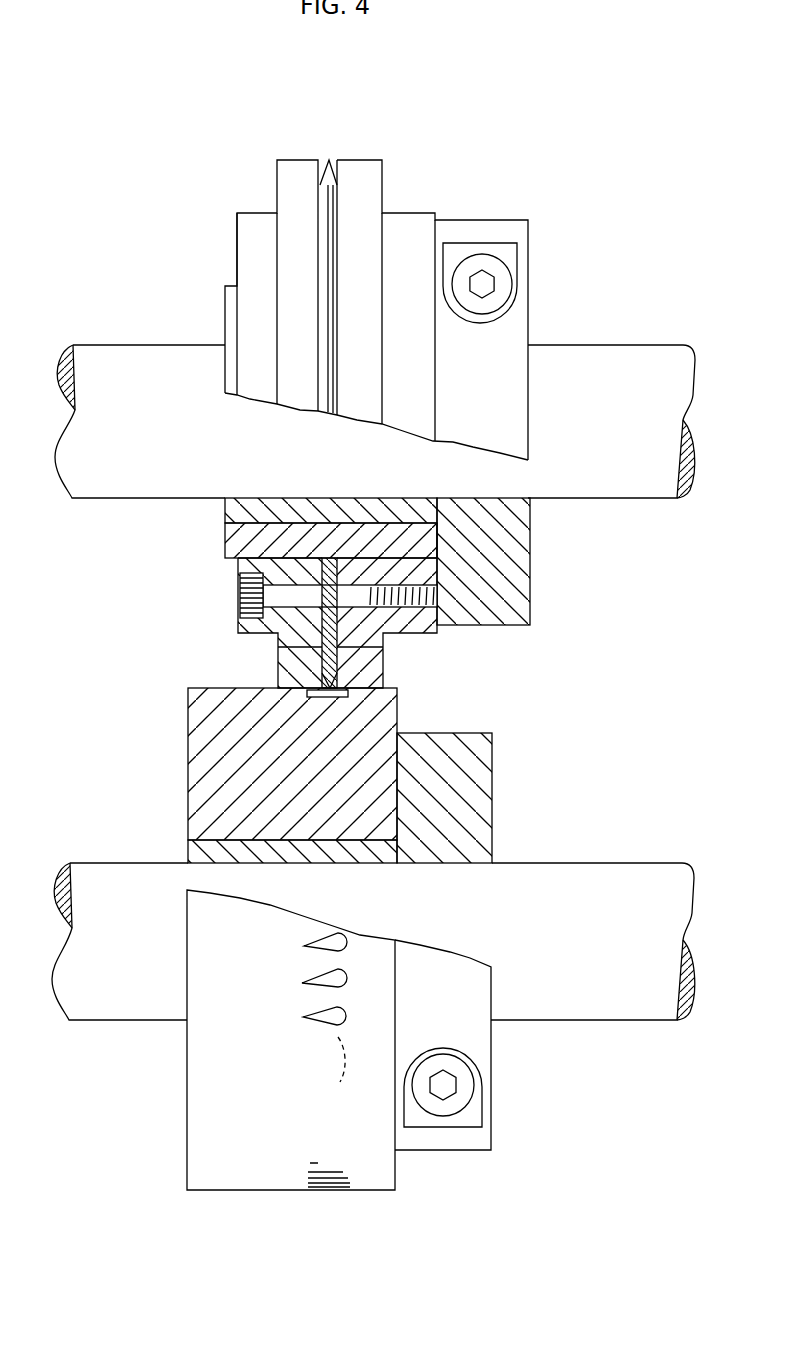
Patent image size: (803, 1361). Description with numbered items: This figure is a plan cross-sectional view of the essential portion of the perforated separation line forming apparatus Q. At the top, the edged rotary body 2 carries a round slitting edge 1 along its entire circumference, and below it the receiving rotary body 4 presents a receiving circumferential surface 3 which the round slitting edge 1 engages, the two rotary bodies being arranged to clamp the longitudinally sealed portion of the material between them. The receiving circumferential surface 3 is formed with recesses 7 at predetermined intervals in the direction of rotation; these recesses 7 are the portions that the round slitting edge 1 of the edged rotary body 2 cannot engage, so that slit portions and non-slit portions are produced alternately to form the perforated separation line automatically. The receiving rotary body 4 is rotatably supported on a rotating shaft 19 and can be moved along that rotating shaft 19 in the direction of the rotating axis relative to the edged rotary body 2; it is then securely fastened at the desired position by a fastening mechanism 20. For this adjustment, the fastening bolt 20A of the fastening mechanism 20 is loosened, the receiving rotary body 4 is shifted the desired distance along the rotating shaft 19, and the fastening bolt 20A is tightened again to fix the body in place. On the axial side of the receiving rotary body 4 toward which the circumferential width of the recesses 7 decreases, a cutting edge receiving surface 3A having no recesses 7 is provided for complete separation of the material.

The round slitting edge 1 is at (329, 158).
The edged rotary body 2 is at (275, 190).
The receiving circumferential surface 3 is at (317, 997).
The cutting edge receiving surface 3A is at (292, 1175).
The receiving rotary body 4 is at (186, 1097).
The recesses 7 is at (334, 703).
The rotating shaft 19 is at (633, 885).
The fastening mechanism 20 is at (513, 1088).
The fastening bolt 20A is at (447, 1090).
The perforated separation line forming apparatus Q is at (561, 168).